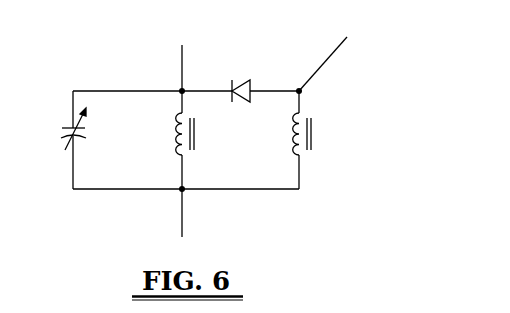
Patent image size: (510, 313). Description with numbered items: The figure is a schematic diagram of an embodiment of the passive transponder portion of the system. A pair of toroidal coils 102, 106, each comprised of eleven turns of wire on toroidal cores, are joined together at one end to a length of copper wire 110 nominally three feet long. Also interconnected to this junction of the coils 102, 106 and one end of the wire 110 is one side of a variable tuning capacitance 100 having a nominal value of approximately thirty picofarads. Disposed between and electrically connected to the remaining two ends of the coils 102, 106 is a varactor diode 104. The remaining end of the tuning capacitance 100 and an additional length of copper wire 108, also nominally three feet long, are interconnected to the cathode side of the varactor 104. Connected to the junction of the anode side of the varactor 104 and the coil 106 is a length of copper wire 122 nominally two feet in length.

The variable tuning capacitance 100 is at (72, 108).
The toroidal coil 102 is at (178, 128).
The varactor diode 104 is at (249, 82).
The toroidal coil 106 is at (302, 112).
The copper wire 108 is at (181, 63).
The copper wire 110 is at (182, 213).
The copper wire 122 is at (327, 59).